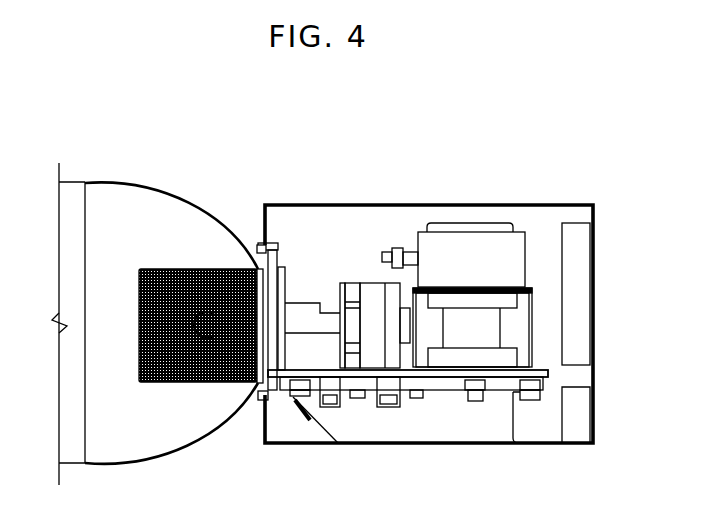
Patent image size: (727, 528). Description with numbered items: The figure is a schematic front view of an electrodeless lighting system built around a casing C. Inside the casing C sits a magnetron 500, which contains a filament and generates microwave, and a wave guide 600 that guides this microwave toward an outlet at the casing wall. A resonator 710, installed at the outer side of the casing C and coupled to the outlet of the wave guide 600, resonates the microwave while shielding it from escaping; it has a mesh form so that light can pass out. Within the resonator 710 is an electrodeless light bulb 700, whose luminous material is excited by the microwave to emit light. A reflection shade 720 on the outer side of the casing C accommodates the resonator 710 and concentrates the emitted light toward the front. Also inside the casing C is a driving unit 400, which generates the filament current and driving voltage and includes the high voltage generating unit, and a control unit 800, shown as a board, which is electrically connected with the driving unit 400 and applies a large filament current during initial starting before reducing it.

The casing C is at (344, 205).
The driving unit 400 is at (577, 240).
The magnetron 500 is at (462, 245).
The wave guide 600 is at (382, 427).
The electrodeless light bulb 700 is at (205, 338).
The resonator 710 is at (173, 269).
The reflection shade 720 is at (130, 462).
The control unit 800 is at (577, 427).